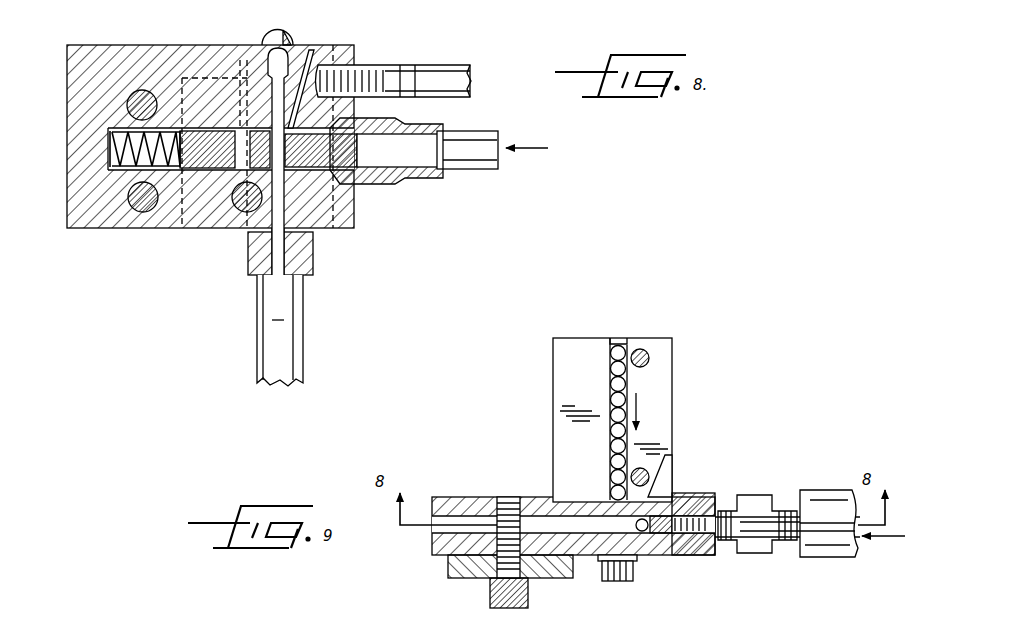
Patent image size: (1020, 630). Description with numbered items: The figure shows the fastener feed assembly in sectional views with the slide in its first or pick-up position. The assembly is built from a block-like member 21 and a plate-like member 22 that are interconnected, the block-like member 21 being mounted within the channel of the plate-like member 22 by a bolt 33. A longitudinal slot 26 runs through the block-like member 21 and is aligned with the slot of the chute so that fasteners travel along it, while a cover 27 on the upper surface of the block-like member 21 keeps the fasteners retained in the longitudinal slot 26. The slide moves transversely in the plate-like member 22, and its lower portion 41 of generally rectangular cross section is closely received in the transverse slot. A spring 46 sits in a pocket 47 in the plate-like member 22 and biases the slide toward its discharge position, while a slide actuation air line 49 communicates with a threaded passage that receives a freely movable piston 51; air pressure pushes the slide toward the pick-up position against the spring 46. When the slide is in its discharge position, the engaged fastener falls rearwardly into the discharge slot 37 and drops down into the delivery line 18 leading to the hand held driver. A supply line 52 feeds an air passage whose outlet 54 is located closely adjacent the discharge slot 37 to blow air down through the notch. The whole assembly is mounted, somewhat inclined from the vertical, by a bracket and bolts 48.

In FIG. 8, the fastener delivery line 18 is at (303, 335).
In FIG. 9, the block-like member 21 is at (553, 371).
In FIG. 8, the plate-like member 22 is at (170, 45).
In FIG. 9, the plate-like member 22 is at (480, 497).
In FIG. 9, the longitudinal slot 26 is at (618, 344).
In FIG. 9, the cover 27 is at (660, 375).
In FIG. 8, the bolt 33 is at (238, 215).
In FIG. 9, the bolt 33 is at (612, 582).
In FIG. 8, the discharge slot 37 is at (278, 62).
In FIG. 9, the discharge slot 37 is at (650, 497).
In FIG. 8, the lower portion 41 is at (183, 200).
In FIG. 9, the lower portion 41 is at (548, 497).
In FIG. 8, the spring 46 is at (110, 150).
In FIG. 9, the pocket 47 is at (470, 575).
In FIG. 8, the bolts 48 is at (127, 103).
In FIG. 9, the bolts 48 is at (515, 600).
In FIG. 8, the slide actuation air line 49 is at (405, 184).
In FIG. 9, the slide actuation air line 49 is at (800, 492).
In FIG. 8, the piston 51 is at (355, 175).
In FIG. 8, the supply line 52 is at (385, 65).
In FIG. 9, the supply line 52 is at (725, 512).
In FIG. 8, the outlet 54 is at (310, 52).